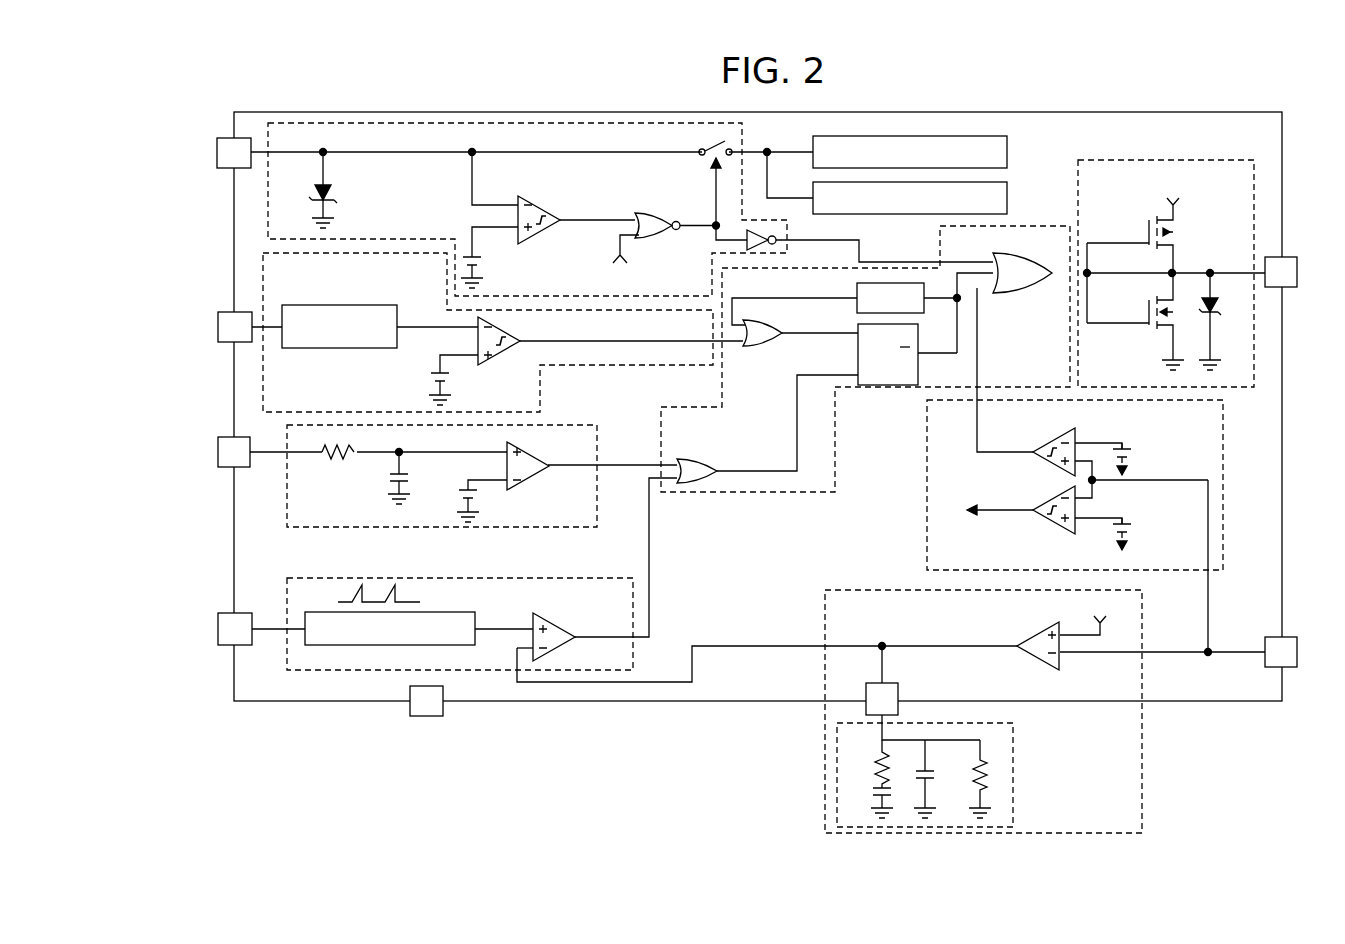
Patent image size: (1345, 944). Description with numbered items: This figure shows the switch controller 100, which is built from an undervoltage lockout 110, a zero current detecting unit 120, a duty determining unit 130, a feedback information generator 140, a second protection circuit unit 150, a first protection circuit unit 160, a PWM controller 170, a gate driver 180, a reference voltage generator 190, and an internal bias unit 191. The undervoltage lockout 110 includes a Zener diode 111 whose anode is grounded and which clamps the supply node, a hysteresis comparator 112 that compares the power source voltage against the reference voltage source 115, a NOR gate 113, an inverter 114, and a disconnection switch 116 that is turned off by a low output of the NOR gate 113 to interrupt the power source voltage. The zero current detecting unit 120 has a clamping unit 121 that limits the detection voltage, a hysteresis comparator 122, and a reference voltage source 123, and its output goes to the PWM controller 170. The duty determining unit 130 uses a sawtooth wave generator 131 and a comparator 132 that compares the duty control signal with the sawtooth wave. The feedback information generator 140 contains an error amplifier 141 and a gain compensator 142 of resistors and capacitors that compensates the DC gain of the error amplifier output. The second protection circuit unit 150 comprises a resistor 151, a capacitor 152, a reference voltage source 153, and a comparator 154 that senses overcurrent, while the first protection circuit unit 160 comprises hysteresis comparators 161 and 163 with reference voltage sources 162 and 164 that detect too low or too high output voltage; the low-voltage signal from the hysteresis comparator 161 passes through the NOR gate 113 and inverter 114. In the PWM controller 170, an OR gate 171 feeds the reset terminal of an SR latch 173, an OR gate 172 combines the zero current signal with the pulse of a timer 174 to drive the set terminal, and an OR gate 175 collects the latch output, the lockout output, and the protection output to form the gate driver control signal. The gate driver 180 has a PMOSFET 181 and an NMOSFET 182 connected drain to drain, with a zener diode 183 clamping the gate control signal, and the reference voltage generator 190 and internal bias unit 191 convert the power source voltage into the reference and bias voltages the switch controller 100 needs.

The switch controller 100 is at (1128, 112).
The undervoltage lockout 110 is at (268, 213).
The Zener diode 111 is at (333, 192).
The hysteresis comparator 112 is at (545, 205).
The NOR gate 113 is at (662, 213).
The inverter 114 is at (745, 247).
The reference voltage source 115 is at (483, 262).
The disconnection switch 116 is at (703, 143).
The zero current detecting unit 120 is at (622, 366).
The clamping unit 121 is at (380, 305).
The hysteresis comparator 122 is at (500, 360).
The reference voltage source 123 is at (430, 376).
The duty determining unit 130 is at (558, 578).
The sawtooth wave generator 131 is at (312, 612).
The comparator 132 is at (570, 625).
The feedback information generator 140 is at (878, 590).
The error amplifier 141 is at (1035, 631).
The gain compensator 142 is at (1013, 745).
The second protection circuit unit 150 is at (434, 527).
The resistor 151 is at (340, 463).
The capacitor 152 is at (392, 478).
The reference voltage source 153 is at (480, 498).
The comparator 154 is at (533, 481).
The first protection circuit unit 160 is at (927, 494).
The hysteresis comparator 161 is at (1049, 531).
The reference voltage source 162 is at (1134, 527).
The hysteresis comparator 163 is at (1046, 441).
The reference voltage source 164 is at (1134, 452).
The PWM controller 170 is at (870, 392).
The OR gate 171 is at (708, 447).
The OR gate 172 is at (753, 348).
The SR latch 173 is at (920, 377).
The timer 174 is at (856, 310).
The OR gate 175 is at (1021, 294).
The gate driver 180 is at (1207, 160).
The PMOSFET 181 is at (1178, 233).
The NMOSFET 182 is at (1150, 330).
The zener diode 183 is at (1220, 302).
The reference voltage generator 190 is at (1009, 152).
The internal bias unit 191 is at (1009, 198).